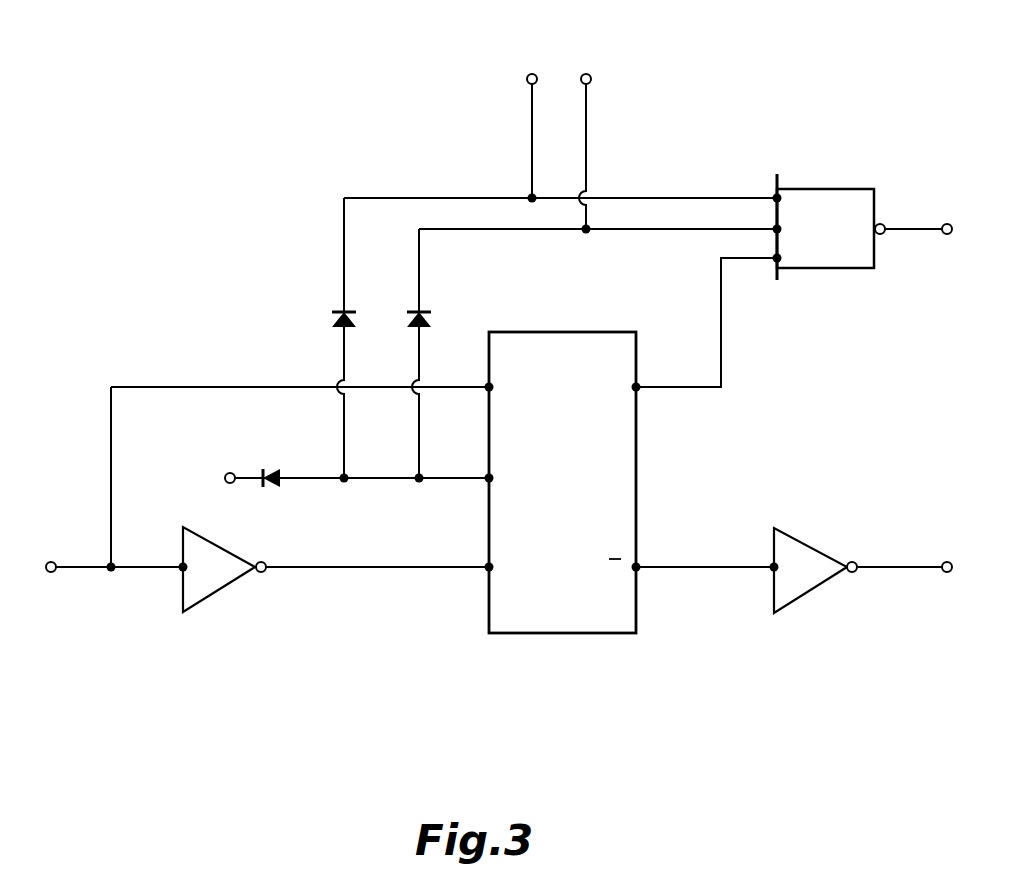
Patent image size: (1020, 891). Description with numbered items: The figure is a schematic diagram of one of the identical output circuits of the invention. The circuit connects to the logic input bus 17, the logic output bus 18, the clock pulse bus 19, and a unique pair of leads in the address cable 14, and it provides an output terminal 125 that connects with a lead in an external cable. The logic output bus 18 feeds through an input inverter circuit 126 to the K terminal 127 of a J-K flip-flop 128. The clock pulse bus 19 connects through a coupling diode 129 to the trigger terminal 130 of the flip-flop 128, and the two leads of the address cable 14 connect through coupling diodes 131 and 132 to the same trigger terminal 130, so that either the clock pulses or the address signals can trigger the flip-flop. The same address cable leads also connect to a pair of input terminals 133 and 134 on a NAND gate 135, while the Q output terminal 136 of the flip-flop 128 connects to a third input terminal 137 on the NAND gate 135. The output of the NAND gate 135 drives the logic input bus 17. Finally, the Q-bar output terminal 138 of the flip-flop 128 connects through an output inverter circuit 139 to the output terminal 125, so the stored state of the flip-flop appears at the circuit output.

The address cable 14 is at (583, 73).
The logic input bus 17 is at (914, 229).
The logic output bus 18 is at (80, 570).
The clock pulse bus 19 is at (228, 474).
The output terminal 125 is at (937, 576).
The input inverter circuit 126 is at (212, 597).
The K terminal 127 is at (488, 572).
The J-K flip-flop 128 is at (594, 636).
The coupling diode 129 is at (276, 470).
The trigger terminal 130 is at (487, 481).
The coupling diode 131 is at (333, 318).
The coupling diode 132 is at (432, 320).
The input terminal 133 is at (775, 196).
The input terminal 134 is at (775, 230).
The NAND gate 135 is at (823, 189).
The Q output terminal 136 is at (640, 390).
The third input terminal 137 is at (777, 262).
The Q-bar output terminal 138 is at (639, 570).
The output inverter circuit 139 is at (805, 598).